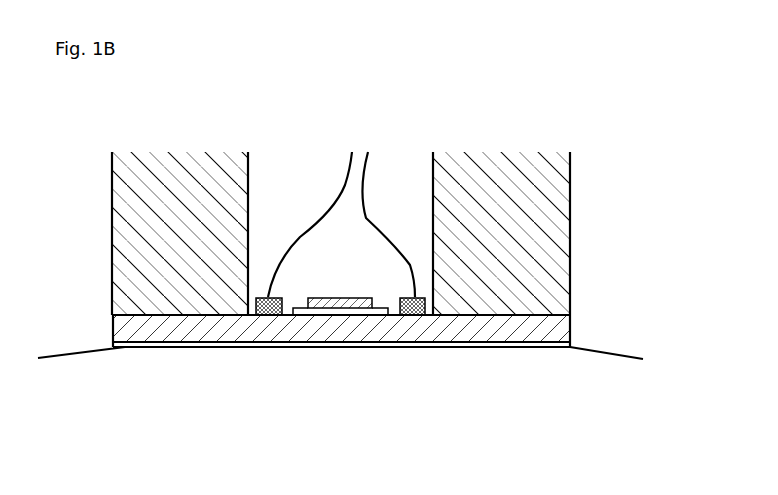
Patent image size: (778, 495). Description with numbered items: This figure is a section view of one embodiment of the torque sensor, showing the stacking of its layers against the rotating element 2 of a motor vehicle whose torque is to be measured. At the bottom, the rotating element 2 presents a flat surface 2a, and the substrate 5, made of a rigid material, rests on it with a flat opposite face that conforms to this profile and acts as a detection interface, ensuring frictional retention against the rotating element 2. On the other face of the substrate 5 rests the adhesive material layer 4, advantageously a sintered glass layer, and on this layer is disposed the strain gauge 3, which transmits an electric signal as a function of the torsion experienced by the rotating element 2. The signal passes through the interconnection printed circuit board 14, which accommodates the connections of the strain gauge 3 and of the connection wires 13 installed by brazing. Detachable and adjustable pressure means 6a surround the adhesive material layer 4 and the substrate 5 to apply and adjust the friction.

The rotating element 2 is at (543, 349).
The flat surface 2a is at (167, 348).
The strain gauge 3 is at (337, 306).
The adhesive material layer 4 is at (368, 309).
The substrate 5 is at (530, 330).
The pressure means 6a is at (481, 215).
The connection wires 13 is at (363, 187).
The interconnection printed circuit board 14 is at (413, 300).